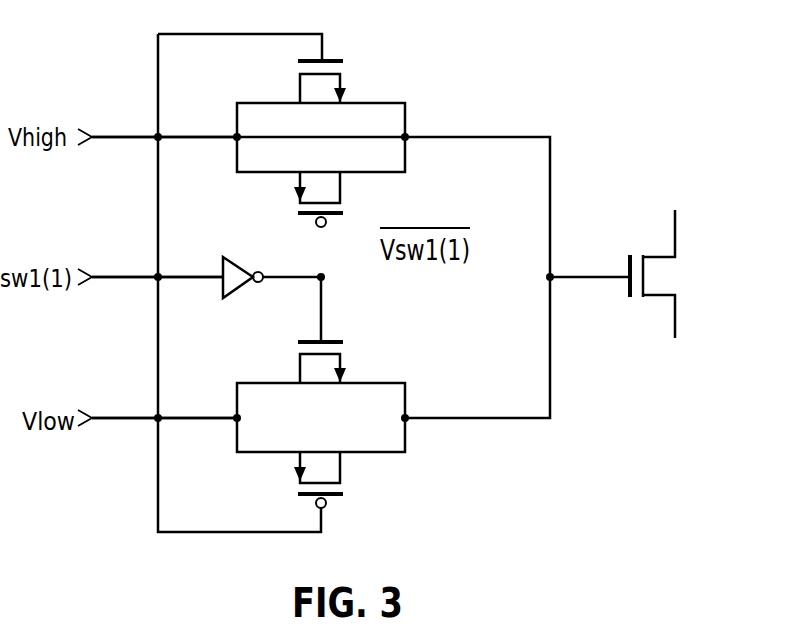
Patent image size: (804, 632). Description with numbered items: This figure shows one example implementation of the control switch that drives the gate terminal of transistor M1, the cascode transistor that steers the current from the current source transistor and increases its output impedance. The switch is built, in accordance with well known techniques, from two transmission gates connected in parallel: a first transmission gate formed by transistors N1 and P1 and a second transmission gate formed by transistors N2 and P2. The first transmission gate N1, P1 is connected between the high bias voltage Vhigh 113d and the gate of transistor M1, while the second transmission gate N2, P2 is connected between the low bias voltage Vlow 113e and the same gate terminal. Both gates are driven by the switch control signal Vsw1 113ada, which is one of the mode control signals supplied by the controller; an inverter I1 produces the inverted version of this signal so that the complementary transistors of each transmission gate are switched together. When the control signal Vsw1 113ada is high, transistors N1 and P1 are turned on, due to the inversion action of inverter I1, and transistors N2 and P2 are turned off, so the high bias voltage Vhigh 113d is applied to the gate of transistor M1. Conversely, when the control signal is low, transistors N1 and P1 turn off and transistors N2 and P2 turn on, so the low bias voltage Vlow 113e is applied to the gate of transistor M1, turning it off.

The high bias voltage Vhigh 113d is at (120, 135).
The switch control signal Vsw1 113ada is at (120, 270).
The low bias voltage Vlow 113e is at (120, 412).
The transistor of first transmission gate N1 is at (321, 99).
The transistor of first transmission gate P1 is at (321, 182).
The transistor of second transmission gate N2 is at (321, 380).
The transistor of second transmission gate P2 is at (321, 463).
The inverter I1 is at (243, 368).
The transistor M1 is at (667, 274).